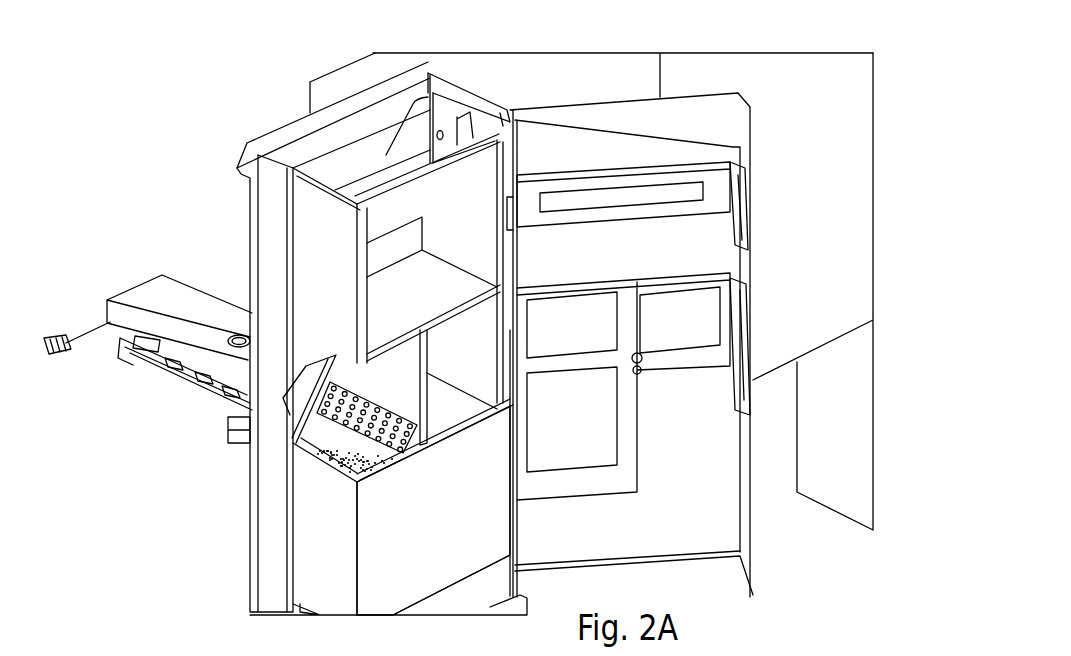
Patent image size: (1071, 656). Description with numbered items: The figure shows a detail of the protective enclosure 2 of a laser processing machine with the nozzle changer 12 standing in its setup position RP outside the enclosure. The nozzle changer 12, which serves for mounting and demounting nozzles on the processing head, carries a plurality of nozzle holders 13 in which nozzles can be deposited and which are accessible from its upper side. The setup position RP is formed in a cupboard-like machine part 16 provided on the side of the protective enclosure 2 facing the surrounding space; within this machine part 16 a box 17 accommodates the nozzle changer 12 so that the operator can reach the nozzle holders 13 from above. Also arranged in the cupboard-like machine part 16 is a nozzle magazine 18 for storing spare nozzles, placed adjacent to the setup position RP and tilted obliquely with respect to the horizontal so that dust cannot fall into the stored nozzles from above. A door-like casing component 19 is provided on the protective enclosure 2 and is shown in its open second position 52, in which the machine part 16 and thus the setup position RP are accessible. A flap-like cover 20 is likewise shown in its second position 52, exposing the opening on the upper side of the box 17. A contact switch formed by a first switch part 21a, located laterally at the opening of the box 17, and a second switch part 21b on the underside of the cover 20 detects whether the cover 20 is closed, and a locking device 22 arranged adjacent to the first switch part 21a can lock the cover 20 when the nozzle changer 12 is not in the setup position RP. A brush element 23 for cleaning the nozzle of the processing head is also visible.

The protective enclosure 2 is at (850, 280).
The nozzle changer 12 is at (308, 472).
The nozzle holders 13 is at (347, 483).
The cupboard-like machine part 16 is at (228, 503).
The box 17 is at (302, 549).
The nozzle magazine 18 is at (390, 410).
The casing component 19 is at (747, 527).
The cover 20 is at (202, 359).
The first switch part 21a is at (383, 480).
The second switch part 21b is at (290, 390).
The locking device 22 is at (424, 413).
The brush element 23 is at (60, 331).
The second position 52 is at (302, 408).
The setup position RP is at (392, 472).